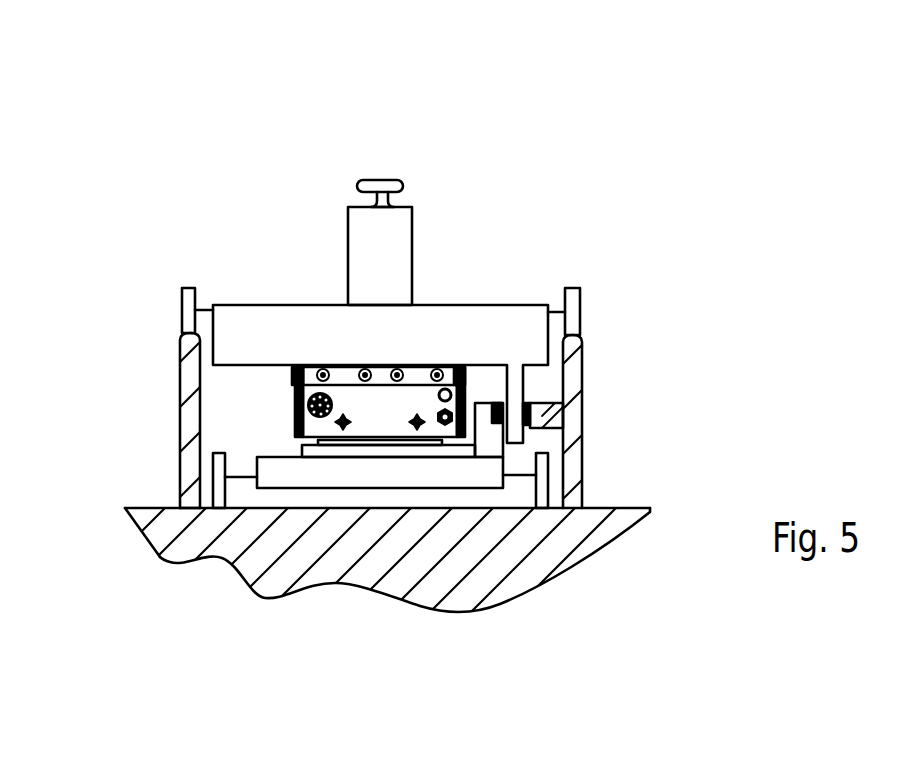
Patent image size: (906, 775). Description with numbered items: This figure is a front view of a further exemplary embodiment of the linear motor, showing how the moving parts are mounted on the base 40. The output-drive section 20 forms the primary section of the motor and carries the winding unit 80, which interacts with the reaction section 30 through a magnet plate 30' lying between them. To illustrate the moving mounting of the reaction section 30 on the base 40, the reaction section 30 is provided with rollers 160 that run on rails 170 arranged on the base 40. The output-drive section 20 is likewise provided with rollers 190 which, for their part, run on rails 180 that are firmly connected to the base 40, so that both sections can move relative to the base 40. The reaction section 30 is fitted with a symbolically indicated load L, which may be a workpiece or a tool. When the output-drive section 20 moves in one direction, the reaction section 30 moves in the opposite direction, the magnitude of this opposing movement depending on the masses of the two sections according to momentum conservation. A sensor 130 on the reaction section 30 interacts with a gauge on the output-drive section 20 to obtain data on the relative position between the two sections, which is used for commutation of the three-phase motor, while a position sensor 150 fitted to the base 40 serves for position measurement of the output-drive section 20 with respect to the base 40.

The load L is at (386, 247).
The output-drive section 20 is at (513, 320).
The reaction section 30 is at (380, 602).
The magnet plate 30' is at (388, 595).
The base 40 is at (597, 535).
The winding unit 80 is at (340, 378).
The sensor 130 is at (500, 438).
The position sensor 150 is at (552, 427).
The rollers 160 is at (195, 493).
The rails 170 is at (220, 508).
The rails 180 is at (190, 387).
The rollers 190 is at (187, 298).